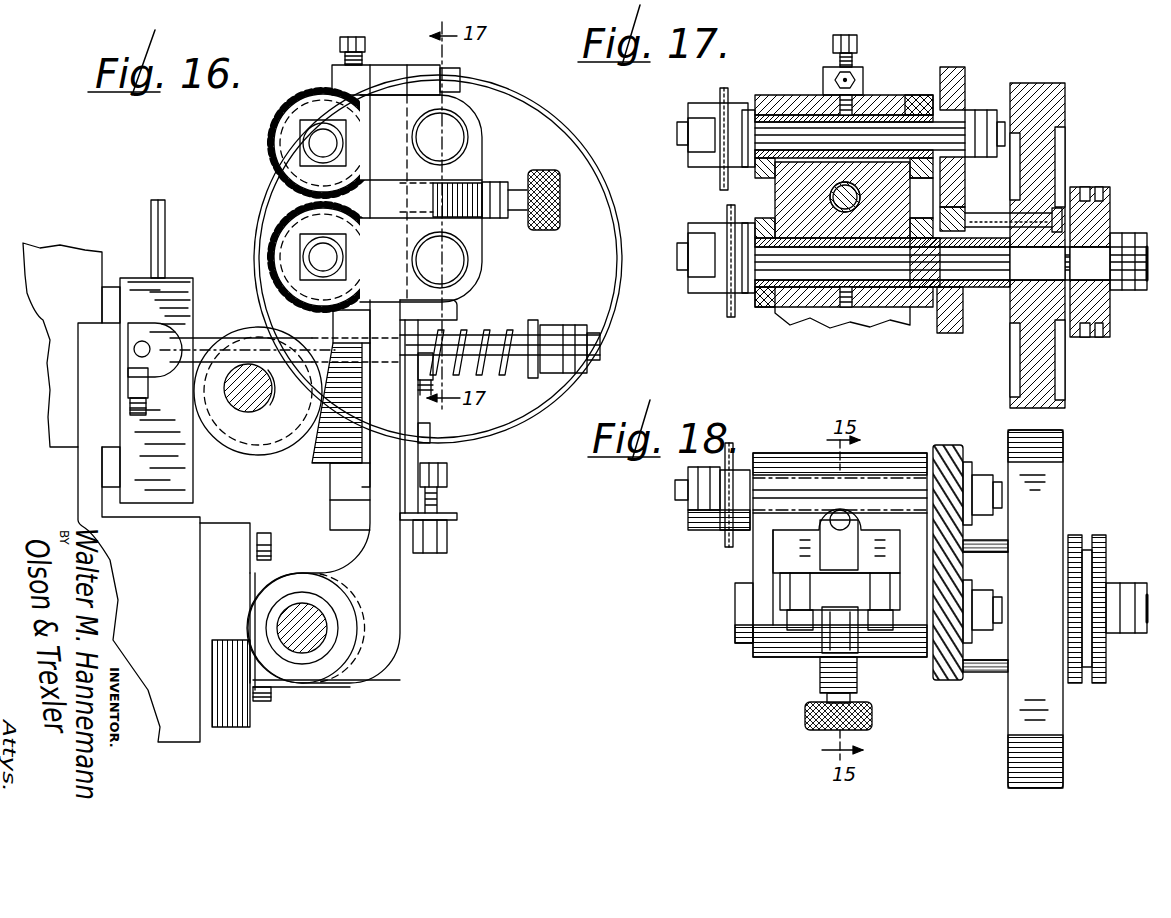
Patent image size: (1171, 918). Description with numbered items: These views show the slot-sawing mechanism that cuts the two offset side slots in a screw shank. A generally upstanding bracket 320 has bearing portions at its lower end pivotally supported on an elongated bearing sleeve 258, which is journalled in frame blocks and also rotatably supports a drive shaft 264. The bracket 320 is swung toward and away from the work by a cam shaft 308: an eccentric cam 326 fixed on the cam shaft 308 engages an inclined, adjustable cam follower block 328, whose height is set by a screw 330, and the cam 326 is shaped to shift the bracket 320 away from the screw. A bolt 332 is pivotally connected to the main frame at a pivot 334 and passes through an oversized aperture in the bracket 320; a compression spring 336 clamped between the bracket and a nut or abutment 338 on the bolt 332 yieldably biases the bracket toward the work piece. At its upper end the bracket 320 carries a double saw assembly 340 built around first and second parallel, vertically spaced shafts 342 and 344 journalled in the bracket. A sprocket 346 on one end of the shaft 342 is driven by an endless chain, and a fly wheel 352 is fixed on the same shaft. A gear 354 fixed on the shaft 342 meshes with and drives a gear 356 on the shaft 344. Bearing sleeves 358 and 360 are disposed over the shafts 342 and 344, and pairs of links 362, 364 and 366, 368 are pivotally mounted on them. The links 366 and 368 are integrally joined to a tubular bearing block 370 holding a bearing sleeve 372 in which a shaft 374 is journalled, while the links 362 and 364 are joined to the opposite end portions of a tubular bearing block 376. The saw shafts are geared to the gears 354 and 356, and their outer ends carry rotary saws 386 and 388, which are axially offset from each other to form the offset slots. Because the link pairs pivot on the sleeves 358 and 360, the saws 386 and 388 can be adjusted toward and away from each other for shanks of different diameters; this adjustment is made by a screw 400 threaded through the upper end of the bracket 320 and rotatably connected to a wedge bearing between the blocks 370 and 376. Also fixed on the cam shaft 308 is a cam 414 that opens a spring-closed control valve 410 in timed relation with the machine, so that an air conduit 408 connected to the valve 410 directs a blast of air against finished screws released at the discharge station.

In FIG. 16, the bearing sleeve 258 is at (307, 660).
In FIG. 16, the pivot pin 264 is at (320, 633).
In FIG. 16, the cam shaft 308 is at (248, 400).
In FIG. 16, the bracket 320 is at (401, 568).
In FIG. 17, the bracket 320 is at (845, 335).
In FIG. 18, the bracket 320 is at (800, 553).
In FIG. 16, the eccentric cam 326 is at (240, 300).
In FIG. 16, the cam follower block 328 is at (310, 467).
In FIG. 16, the screw 330 is at (437, 500).
In FIG. 16, the bolt 332 is at (497, 373).
In FIG. 16, the pivotal connection 334 is at (133, 330).
In FIG. 16, the compression spring 336 is at (493, 335).
In FIG. 16, the nut or abutment means 338 is at (557, 330).
In FIG. 16, the double saw assembly 340 is at (493, 197).
In FIG. 18, the double saw assembly 340 is at (738, 557).
In FIG. 17, the first shaft 342 is at (777, 300).
In FIG. 17, the second shaft 344 is at (767, 133).
In FIG. 17, the sprocket 346 is at (1097, 215).
In FIG. 18, the sprocket 346 is at (1104, 535).
In FIG. 16, the fly wheel 352 is at (603, 160).
In FIG. 17, the fly wheel 352 is at (1043, 100).
In FIG. 18, the fly wheel 352 is at (1060, 445).
In FIG. 17, the gear 354 is at (950, 333).
In FIG. 17, the gear 356 is at (957, 70).
In FIG. 18, the gear 356 is at (955, 680).
In FIG. 17, the bearing sleeve 358 is at (758, 308).
In FIG. 17, the bearing sleeve 360 is at (890, 107).
In FIG. 17, the link 362 is at (765, 202).
In FIG. 17, the link 364 is at (920, 307).
In FIG. 17, the link 366 is at (762, 185).
In FIG. 18, the link 366 is at (763, 650).
In FIG. 16, the link 368 is at (355, 120).
In FIG. 17, the link 368 is at (915, 100).
In FIG. 18, the link 368 is at (917, 647).
In FIG. 18, the tubular bearing block 370 is at (883, 460).
In FIG. 18, the bearing sleeve 372 is at (917, 453).
In FIG. 18, the shaft 374 is at (777, 487).
In FIG. 16, the tubular bearing block 376 is at (440, 260).
In FIG. 17, the saw 386 is at (720, 180).
In FIG. 18, the saw 386 is at (725, 547).
In FIG. 17, the saw 388 is at (727, 312).
In FIG. 16, the screw 400 is at (500, 163).
In FIG. 17, the screw 400 is at (860, 200).
In FIG. 18, the screw 400 is at (832, 675).
In FIG. 16, the conduit 408 is at (160, 205).
In FIG. 16, the control valve 410 is at (175, 278).
In FIG. 16, the cam 414 is at (275, 445).